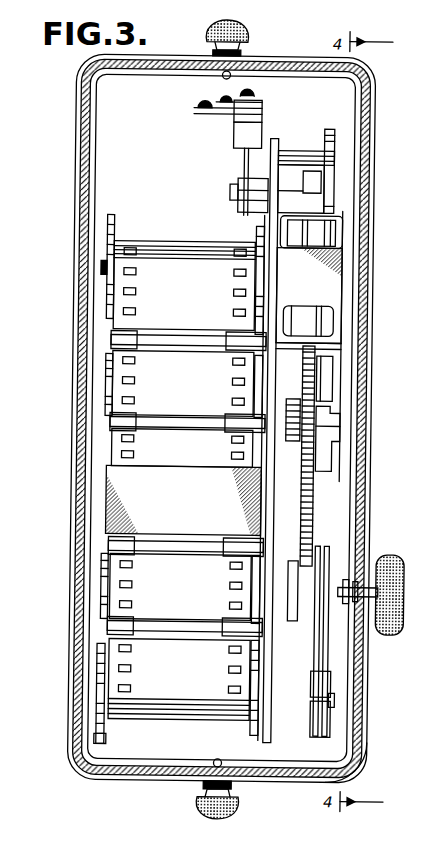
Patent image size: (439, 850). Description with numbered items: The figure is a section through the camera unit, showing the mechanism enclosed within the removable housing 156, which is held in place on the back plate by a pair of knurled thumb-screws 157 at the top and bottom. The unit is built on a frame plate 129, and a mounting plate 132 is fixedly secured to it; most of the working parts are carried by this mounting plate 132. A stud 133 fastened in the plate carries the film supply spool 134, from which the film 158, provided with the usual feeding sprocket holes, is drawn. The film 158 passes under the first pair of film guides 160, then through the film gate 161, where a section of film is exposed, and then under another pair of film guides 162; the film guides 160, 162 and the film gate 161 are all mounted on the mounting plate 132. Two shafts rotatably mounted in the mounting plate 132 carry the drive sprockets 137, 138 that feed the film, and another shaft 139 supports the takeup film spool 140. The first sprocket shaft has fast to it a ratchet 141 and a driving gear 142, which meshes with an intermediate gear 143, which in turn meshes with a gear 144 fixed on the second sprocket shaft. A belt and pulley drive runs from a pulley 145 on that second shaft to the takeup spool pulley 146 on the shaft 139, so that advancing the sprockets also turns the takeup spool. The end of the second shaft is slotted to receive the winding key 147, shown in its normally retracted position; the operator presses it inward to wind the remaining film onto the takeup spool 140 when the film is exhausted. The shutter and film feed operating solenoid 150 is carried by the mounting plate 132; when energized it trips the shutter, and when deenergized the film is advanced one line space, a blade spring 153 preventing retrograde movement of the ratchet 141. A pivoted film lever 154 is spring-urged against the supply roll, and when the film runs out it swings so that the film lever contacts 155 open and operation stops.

The frame plate 129 is at (372, 325).
The mounting plate 132 is at (272, 150).
The stud 133 is at (100, 270).
The film supply spool 134 is at (110, 232).
The drive sprocket 137 is at (108, 392).
The drive sprocket 138 is at (105, 600).
The shaft 139 is at (334, 712).
The takeup film spool 140 is at (100, 740).
The ratchet 141 is at (338, 418).
The driving gear 142 is at (299, 400).
The intermediate gear 143 is at (314, 485).
The gear 144 is at (300, 600).
The pulley 145 is at (331, 630).
The takeup spool pulley 146 is at (334, 688).
The winding key 147 is at (378, 562).
The shutter and film feed operating solenoid 150 is at (305, 234).
The blade spring 153 is at (333, 385).
The film lever 154 is at (240, 165).
The film lever contacts 155 is at (256, 112).
The housing 156 is at (368, 762).
The knurled thumb-screws 157 is at (242, 40).
The film 158 is at (172, 266).
The film guides 160 is at (191, 346).
The film gate 161 is at (184, 500).
The film guides 162 is at (189, 556).